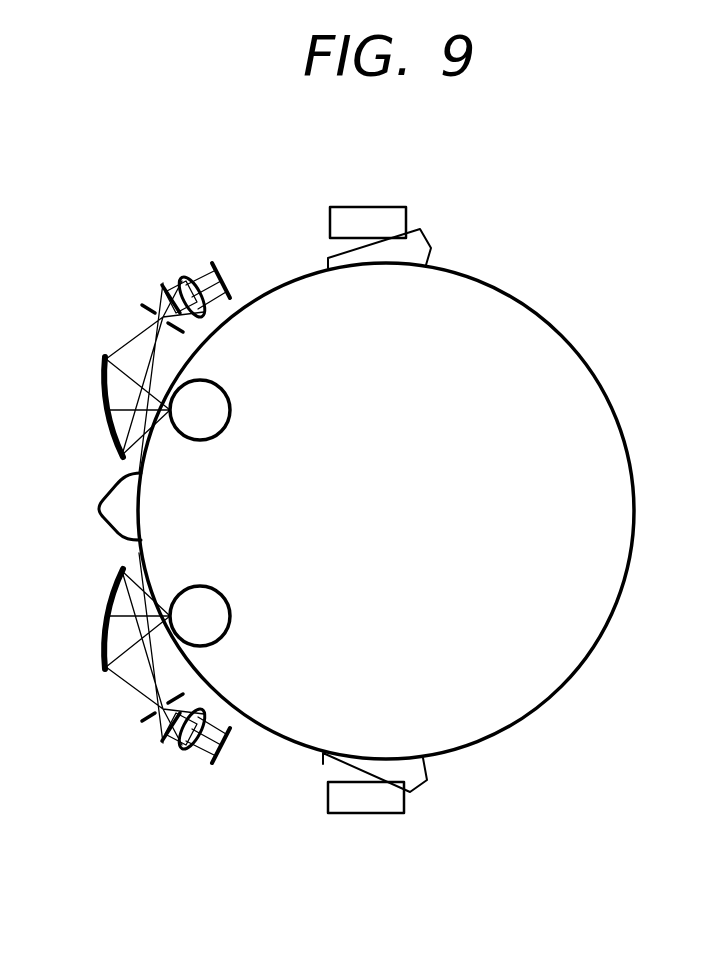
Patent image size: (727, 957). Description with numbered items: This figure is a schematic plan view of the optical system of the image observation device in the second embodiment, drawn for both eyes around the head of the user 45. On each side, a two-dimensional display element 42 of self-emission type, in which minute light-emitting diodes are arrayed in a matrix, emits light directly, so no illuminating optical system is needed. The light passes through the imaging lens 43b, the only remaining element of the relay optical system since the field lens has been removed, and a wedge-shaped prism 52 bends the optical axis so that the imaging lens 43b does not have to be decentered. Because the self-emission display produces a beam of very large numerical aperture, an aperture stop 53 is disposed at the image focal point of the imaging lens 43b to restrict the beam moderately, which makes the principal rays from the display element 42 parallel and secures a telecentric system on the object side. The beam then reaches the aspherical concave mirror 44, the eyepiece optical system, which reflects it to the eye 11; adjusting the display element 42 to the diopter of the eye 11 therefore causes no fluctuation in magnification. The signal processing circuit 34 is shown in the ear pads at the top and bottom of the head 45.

The head of the user 45 is at (528, 698).
The signal processing circuit 34 is at (375, 207).
The eye 11 is at (229, 398).
The aspherical concave mirror 44 is at (101, 413).
The aperture stop 53 is at (142, 303).
The wedge-shaped prism 52 is at (160, 285).
The imaging lens 43b is at (185, 278).
The two-dimensional display element 42 is at (216, 262).